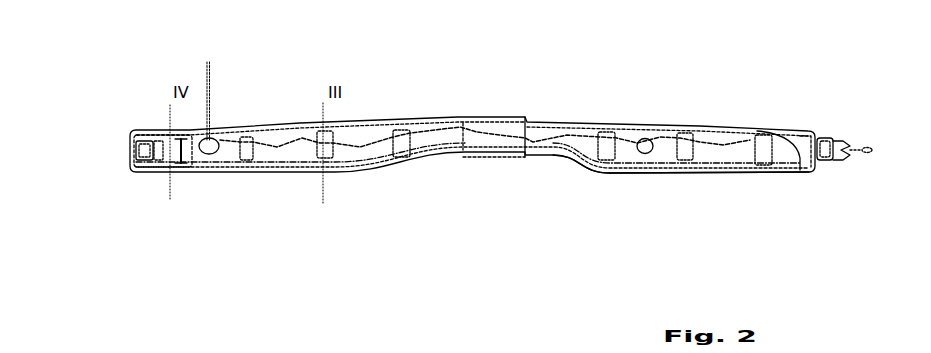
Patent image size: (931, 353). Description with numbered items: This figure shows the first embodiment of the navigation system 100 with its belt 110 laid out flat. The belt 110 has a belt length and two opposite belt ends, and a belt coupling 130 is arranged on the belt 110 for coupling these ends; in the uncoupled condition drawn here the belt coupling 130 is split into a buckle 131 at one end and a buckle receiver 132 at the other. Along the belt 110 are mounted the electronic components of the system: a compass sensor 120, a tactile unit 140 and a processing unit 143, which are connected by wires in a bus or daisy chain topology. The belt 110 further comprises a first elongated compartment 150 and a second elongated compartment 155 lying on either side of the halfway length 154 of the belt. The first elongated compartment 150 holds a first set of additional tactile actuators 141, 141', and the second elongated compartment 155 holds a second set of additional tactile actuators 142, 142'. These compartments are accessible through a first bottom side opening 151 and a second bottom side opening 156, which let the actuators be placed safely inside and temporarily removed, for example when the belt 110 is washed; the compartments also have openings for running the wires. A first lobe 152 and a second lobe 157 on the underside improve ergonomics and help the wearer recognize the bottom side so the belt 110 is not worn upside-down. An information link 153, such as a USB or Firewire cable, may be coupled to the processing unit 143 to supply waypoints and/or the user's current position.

The navigation system 100 is at (223, 128).
The belt 110 is at (272, 128).
The compass sensor 120 is at (647, 138).
The belt coupling 130 is at (132, 143).
The buckle 131 is at (837, 137).
The buckle receiver 132 is at (132, 162).
The tactile unit 140 is at (170, 168).
The first set of additional tactile actuators 141 is at (230, 204).
The first set of additional tactile actuators 141' is at (301, 187).
The second set of additional tactile actuators 142 is at (748, 202).
The second set of additional tactile actuators 142' is at (669, 201).
The processing unit 143 is at (208, 155).
The first elongated compartment 150 is at (357, 130).
The first bottom side opening 151 is at (357, 173).
The first lobe 152 is at (397, 178).
The information link 153 is at (205, 70).
The halfway length of belt 154 is at (518, 128).
The second elongated compartment 155 is at (722, 137).
The second bottom side opening 156 is at (720, 172).
The second lobe 157 is at (605, 175).